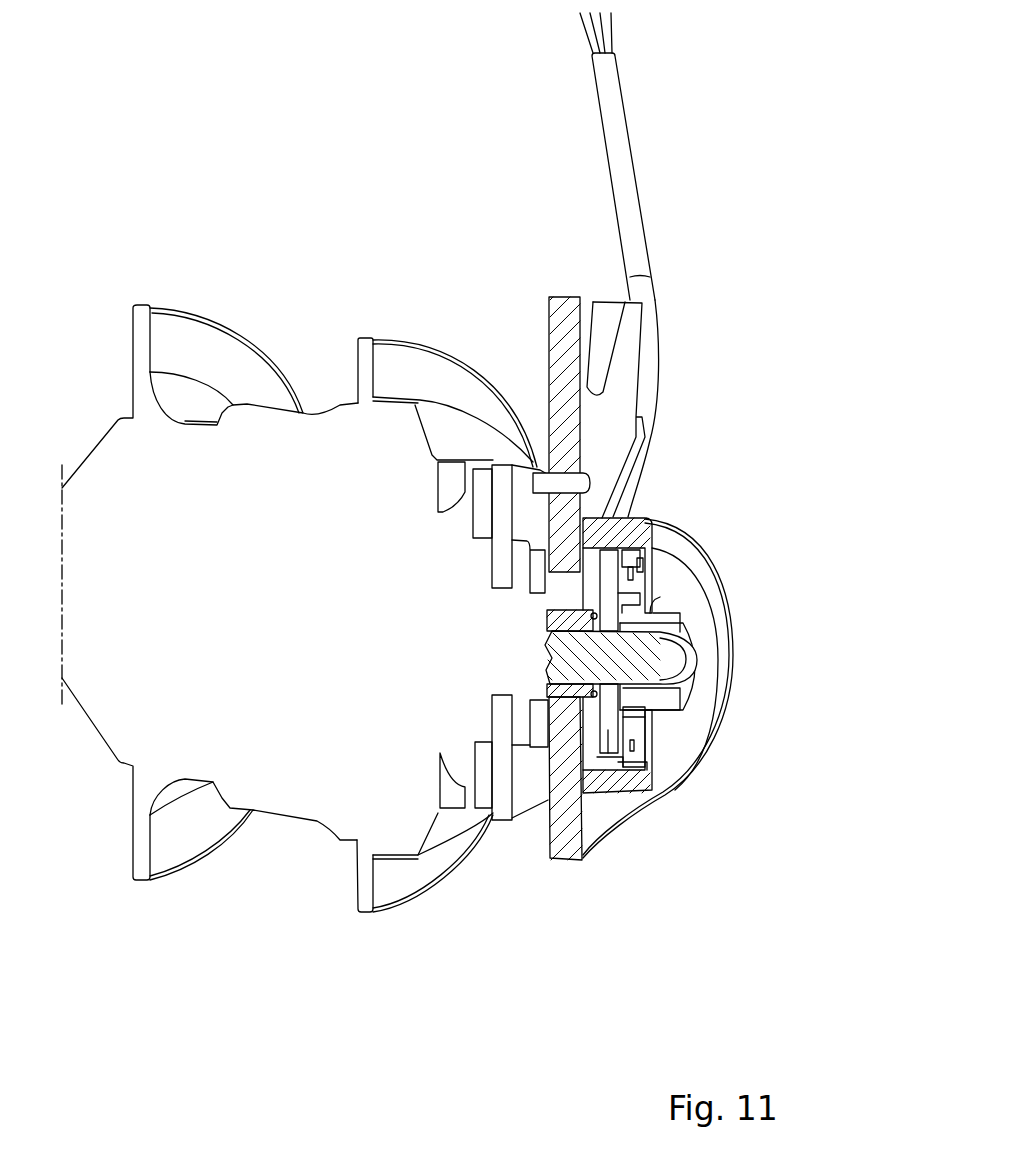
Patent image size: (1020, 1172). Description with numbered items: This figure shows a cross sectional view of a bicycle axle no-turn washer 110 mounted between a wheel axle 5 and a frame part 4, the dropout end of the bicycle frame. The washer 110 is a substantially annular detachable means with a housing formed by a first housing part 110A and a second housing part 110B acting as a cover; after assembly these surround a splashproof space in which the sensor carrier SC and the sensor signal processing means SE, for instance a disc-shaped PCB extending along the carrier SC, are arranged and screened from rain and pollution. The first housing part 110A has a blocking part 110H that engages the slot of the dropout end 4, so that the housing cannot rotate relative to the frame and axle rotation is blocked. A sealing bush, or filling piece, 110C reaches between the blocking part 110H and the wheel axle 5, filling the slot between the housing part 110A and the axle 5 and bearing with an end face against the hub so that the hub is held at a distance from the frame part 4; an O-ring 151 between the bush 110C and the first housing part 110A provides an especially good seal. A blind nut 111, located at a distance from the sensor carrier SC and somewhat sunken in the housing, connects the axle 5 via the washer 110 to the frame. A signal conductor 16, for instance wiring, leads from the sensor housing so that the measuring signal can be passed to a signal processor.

The rear axle 5 is at (303, 360).
The signal conductor 16 is at (610, 100).
The frame part 4 is at (628, 348).
The no-turn washer 110 is at (667, 517).
The first housing part 110A is at (566, 581).
The blocking part 110H is at (453, 475).
The second housing part 110B is at (715, 575).
The sealing bush 110C is at (547, 682).
The nut 111 is at (697, 698).
The O-ring 151 is at (576, 757).
The sensor signal processing means SE is at (635, 737).
The sensor carrier SC is at (606, 745).